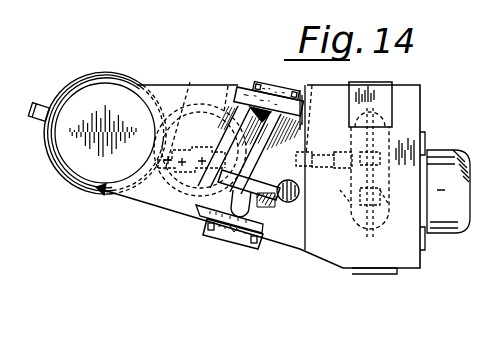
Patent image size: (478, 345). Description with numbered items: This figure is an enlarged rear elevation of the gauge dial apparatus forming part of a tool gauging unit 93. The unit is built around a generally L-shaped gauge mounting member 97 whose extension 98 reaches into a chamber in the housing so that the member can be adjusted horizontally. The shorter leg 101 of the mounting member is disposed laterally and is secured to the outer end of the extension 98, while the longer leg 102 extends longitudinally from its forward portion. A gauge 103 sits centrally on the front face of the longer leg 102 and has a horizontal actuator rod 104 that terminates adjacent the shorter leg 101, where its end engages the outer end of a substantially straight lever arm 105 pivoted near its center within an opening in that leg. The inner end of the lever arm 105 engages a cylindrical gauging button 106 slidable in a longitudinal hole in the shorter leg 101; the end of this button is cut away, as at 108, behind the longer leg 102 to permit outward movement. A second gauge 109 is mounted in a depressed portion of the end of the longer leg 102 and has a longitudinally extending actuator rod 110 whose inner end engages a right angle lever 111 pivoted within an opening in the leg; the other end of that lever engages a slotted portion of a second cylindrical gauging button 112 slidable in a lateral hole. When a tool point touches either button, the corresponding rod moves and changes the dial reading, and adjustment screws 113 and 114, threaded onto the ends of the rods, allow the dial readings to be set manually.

The tool gauging unit 93 is at (170, 237).
The gauge mounting member 97 is at (243, 88).
The extension 98 is at (443, 165).
The shorter leg 101 is at (412, 105).
The longer leg 102 is at (108, 193).
The gauge 103 is at (229, 88).
The horizontal actuator rod 104 is at (316, 162).
The lever arm 105 is at (381, 213).
The cylindrical gauging button 106 is at (367, 228).
The cut away 108 is at (338, 208).
The second gauge 109 is at (78, 78).
The actuator rod 110 is at (194, 121).
The right angle lever 111 is at (270, 176).
The cylindrical gauging button 112 is at (297, 205).
The adjustment screw 113 is at (347, 155).
The adjustment screw 114 is at (197, 153).